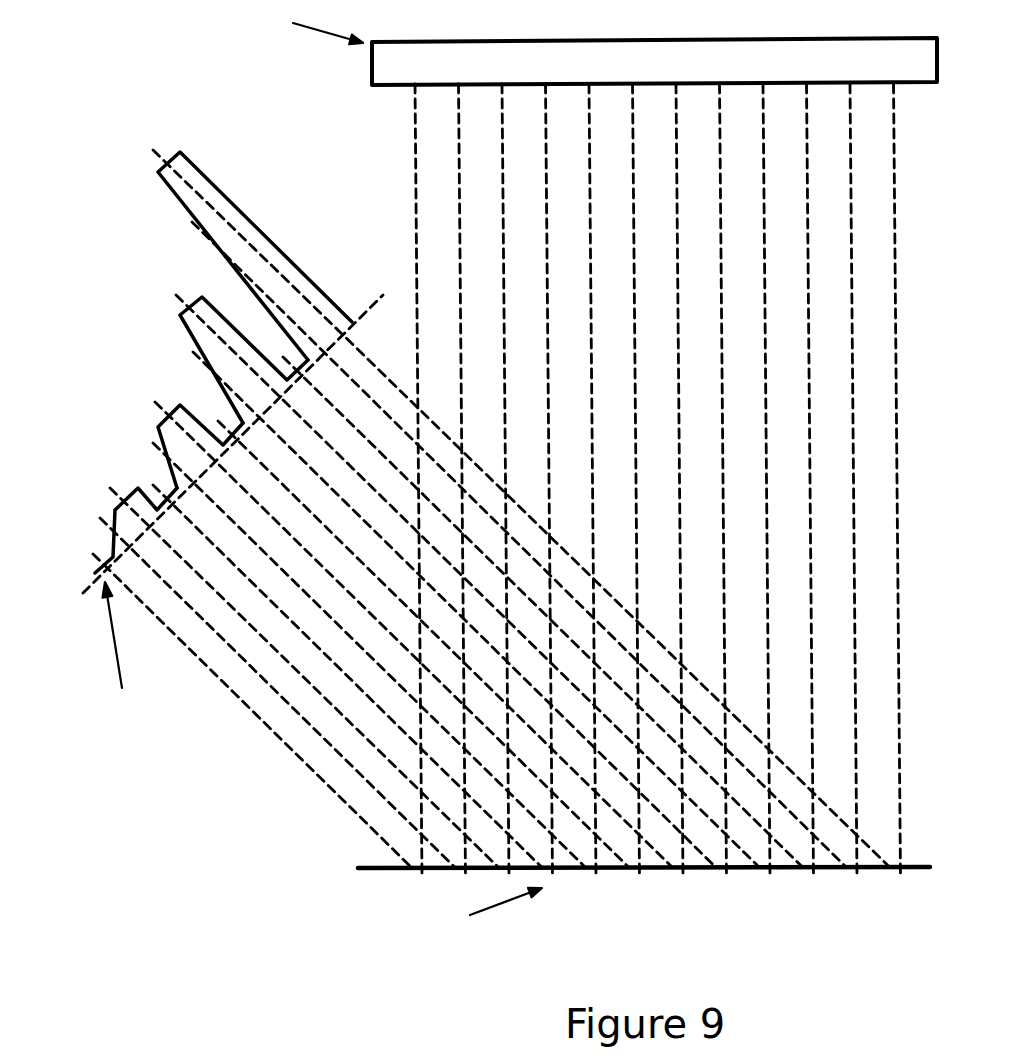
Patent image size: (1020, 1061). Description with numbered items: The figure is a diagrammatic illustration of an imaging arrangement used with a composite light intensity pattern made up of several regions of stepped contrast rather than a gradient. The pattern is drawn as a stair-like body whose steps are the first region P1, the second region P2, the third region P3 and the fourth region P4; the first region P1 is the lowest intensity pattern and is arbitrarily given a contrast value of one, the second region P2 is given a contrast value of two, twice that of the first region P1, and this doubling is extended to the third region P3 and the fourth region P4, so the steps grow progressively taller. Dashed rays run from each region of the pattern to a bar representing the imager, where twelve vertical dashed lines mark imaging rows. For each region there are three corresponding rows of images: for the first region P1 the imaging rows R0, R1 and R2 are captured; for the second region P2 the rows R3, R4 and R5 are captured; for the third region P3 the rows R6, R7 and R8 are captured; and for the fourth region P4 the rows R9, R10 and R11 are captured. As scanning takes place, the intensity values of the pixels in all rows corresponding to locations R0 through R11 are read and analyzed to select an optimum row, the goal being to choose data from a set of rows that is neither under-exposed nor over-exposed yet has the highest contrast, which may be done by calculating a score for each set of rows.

The first region P1 is at (89, 486).
The second region P2 is at (135, 409).
The third region P3 is at (132, 299).
The fourth region P4 is at (138, 158).
The imaging row R0 is at (406, 480).
The imaging row R1 is at (450, 480).
The imaging row R2 is at (493, 480).
The imaging row R3 is at (537, 480).
The imaging row R4 is at (580, 480).
The imaging row R5 is at (624, 480).
The imaging row R6 is at (667, 480).
The imaging row R7 is at (711, 480).
The imaging row R8 is at (754, 480).
The imaging row R9 is at (798, 480).
The imaging row R10 is at (834, 480).
The imaging row R11 is at (879, 480).